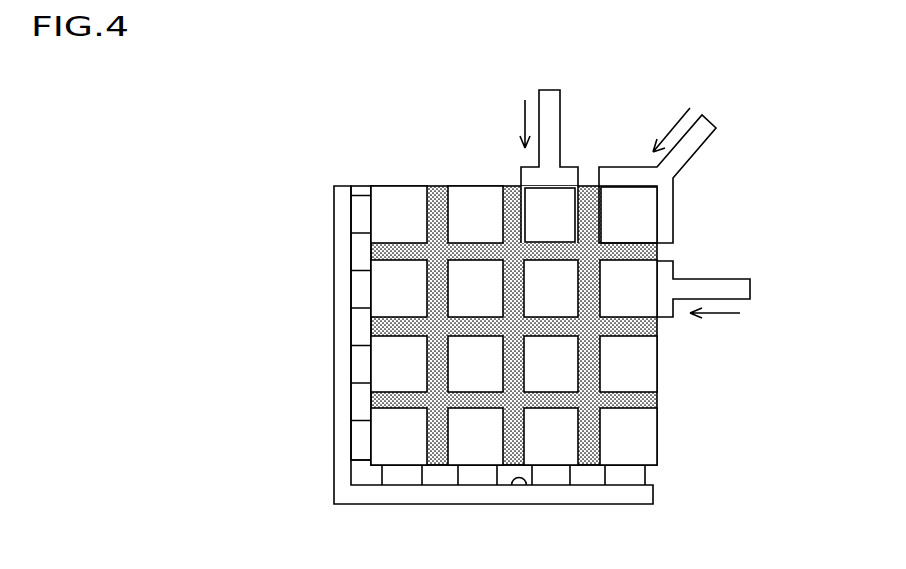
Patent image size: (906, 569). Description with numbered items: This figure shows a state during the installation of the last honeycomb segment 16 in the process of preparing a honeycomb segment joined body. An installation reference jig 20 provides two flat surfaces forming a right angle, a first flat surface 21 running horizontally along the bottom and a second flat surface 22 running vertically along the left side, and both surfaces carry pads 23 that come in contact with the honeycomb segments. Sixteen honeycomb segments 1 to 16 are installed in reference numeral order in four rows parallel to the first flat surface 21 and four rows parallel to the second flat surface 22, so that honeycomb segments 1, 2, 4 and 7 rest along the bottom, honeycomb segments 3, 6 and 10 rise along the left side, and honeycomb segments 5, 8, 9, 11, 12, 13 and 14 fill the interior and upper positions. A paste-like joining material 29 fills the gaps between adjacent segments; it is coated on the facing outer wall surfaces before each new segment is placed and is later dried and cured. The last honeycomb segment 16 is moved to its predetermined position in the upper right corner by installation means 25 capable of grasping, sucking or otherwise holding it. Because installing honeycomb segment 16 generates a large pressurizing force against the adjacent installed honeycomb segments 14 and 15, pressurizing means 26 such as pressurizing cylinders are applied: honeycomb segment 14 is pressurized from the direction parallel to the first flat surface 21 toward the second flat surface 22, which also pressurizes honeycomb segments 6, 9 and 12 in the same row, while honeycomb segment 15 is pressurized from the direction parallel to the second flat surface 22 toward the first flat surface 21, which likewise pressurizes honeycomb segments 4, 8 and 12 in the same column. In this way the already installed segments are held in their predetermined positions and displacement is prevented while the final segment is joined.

The installation reference jig 20 is at (303, 262).
The first flat surface 21 is at (511, 487).
The second flat surface 22 is at (353, 404).
The pad 23 is at (357, 355).
The installation means 25 is at (705, 137).
The pressurizing means 26 is at (556, 107).
The joining material 29 is at (435, 465).
The honeycomb segment 1 is at (399, 436).
The honeycomb segment 2 is at (475, 436).
The honeycomb segment 3 is at (399, 364).
The honeycomb segment 4 is at (551, 436).
The honeycomb segment 5 is at (475, 364).
The honeycomb segment 6 is at (399, 288).
The honeycomb segment 7 is at (628, 436).
The honeycomb segment 8 is at (551, 364).
The honeycomb segment 9 is at (475, 288).
The honeycomb segment 10 is at (399, 214).
The honeycomb segment 11 is at (628, 364).
The honeycomb segment 12 is at (551, 288).
The honeycomb segment 13 is at (475, 214).
The honeycomb segment 14 is at (628, 288).
The honeycomb segment 15 is at (550, 215).
The honeycomb segment 16 is at (629, 215).